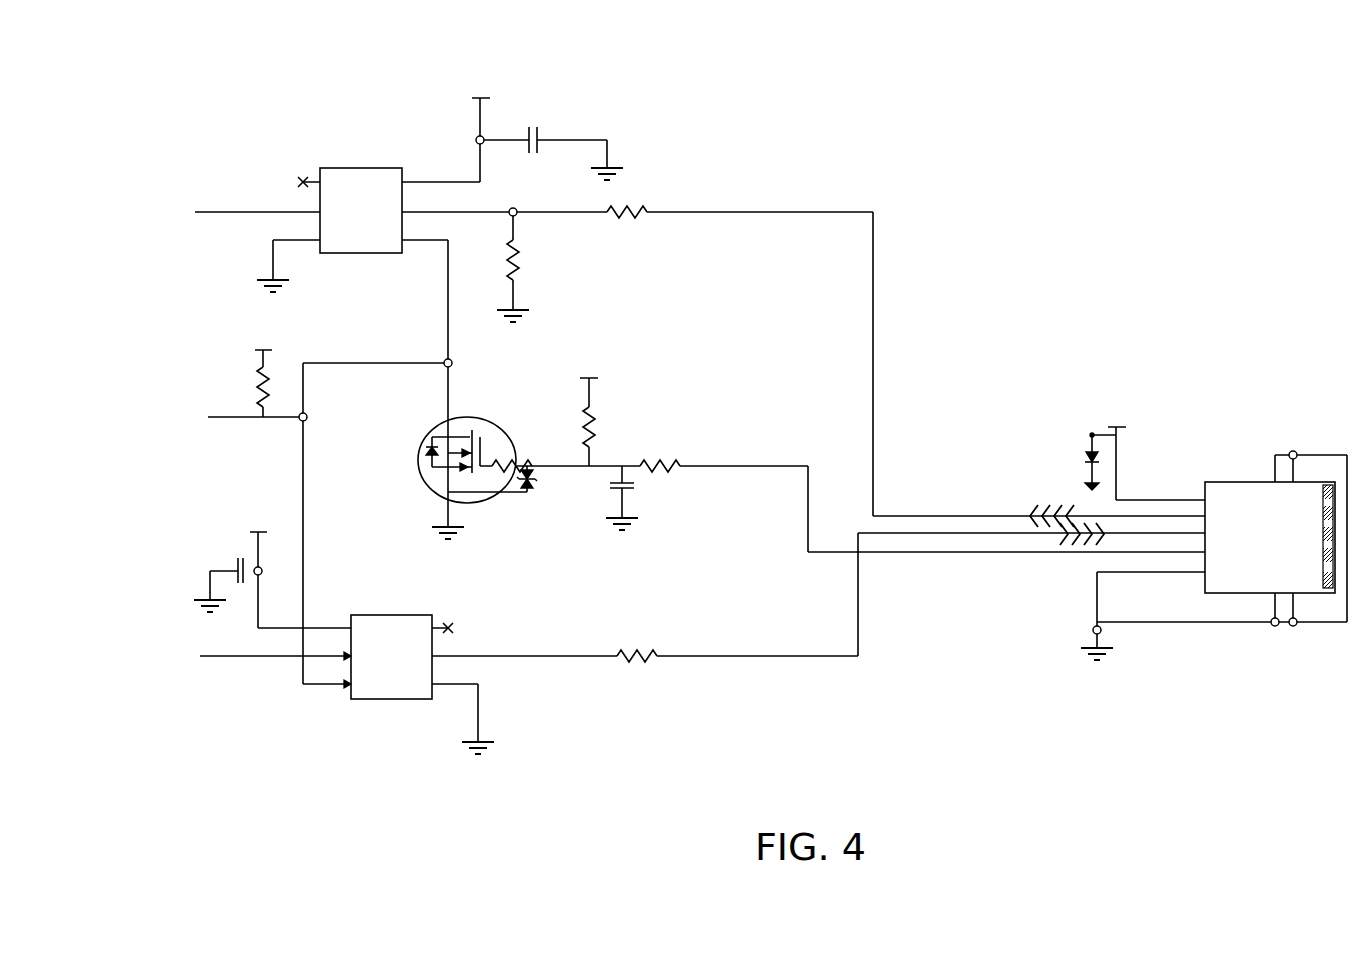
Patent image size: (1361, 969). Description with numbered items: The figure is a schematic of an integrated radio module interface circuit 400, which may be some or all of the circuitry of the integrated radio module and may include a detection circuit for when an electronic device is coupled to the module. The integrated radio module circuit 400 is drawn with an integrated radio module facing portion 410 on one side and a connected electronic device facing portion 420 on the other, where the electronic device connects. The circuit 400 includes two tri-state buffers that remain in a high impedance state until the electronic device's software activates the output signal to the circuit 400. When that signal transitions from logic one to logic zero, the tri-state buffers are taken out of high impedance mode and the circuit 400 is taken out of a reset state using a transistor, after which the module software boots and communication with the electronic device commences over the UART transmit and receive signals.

The integrated radio module interface circuit 400 is at (237, 84).
The integrated radio module facing portion 410 is at (1168, 327).
The connected electronic device facing portion 420 is at (1300, 670).